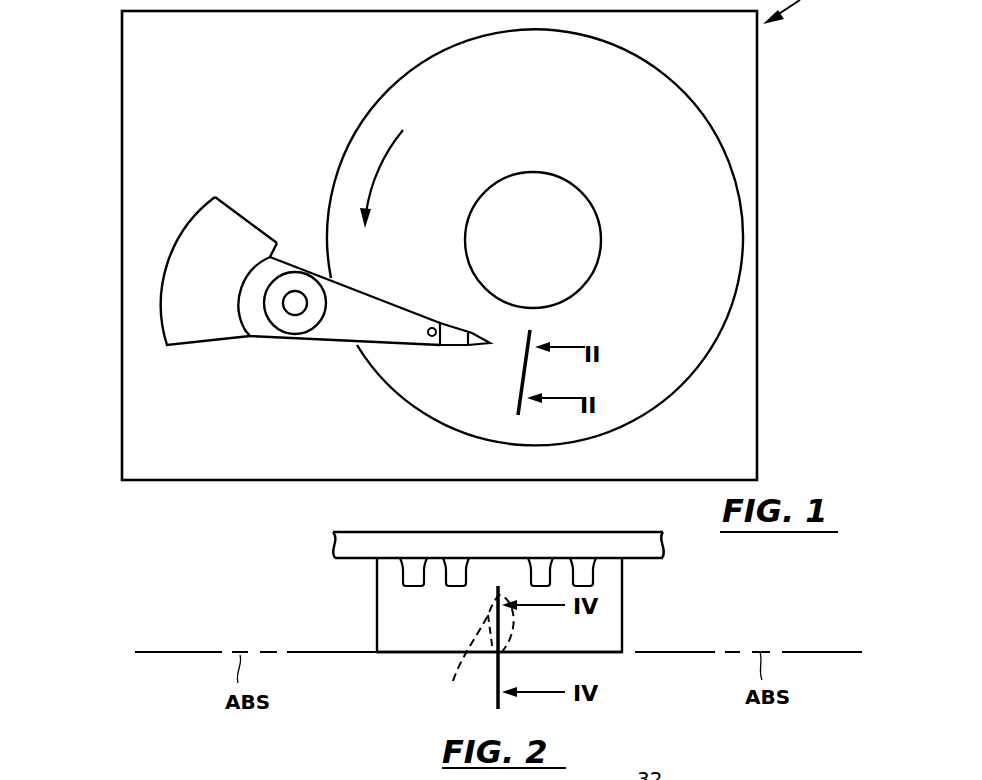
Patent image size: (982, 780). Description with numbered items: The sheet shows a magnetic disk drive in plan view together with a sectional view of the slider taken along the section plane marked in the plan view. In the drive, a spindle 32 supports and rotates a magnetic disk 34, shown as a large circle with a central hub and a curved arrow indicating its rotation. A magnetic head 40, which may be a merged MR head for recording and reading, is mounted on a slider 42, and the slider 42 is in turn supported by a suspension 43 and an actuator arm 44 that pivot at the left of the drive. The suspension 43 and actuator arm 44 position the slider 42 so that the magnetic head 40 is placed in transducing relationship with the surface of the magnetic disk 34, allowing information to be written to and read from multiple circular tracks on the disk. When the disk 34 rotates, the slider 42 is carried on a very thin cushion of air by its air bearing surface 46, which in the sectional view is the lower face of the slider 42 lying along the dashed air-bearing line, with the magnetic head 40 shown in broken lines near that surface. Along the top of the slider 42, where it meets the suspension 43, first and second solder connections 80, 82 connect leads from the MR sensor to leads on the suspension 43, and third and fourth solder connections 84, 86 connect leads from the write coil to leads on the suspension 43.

In FIG. 1, the spindle 32 is at (578, 188).
In FIG. 1, the magnetic disk 34 is at (676, 257).
In FIG. 2, the magnetic head 40 is at (477, 652).
In FIG. 1, the slider 42 is at (492, 348).
In FIG. 2, the slider 42 is at (377, 605).
In FIG. 1, the suspension 43 is at (448, 348).
In FIG. 1, the actuator arm 44 is at (367, 290).
In FIG. 2, the air bearing surface 46 is at (408, 652).
In FIG. 2, the first solder connection 80 is at (410, 562).
In FIG. 2, the second solder connection 82 is at (580, 562).
In FIG. 2, the third solder connection 84 is at (458, 562).
In FIG. 2, the fourth solder connection 86 is at (538, 562).